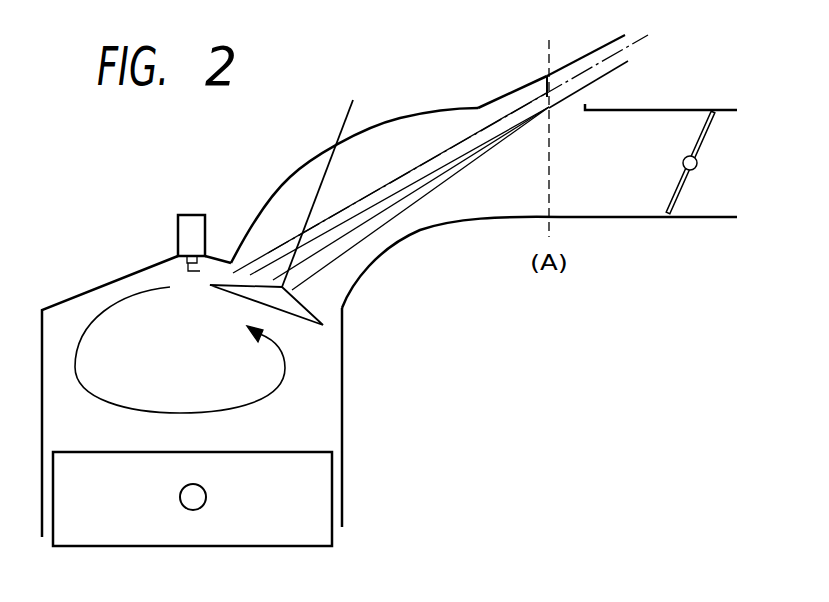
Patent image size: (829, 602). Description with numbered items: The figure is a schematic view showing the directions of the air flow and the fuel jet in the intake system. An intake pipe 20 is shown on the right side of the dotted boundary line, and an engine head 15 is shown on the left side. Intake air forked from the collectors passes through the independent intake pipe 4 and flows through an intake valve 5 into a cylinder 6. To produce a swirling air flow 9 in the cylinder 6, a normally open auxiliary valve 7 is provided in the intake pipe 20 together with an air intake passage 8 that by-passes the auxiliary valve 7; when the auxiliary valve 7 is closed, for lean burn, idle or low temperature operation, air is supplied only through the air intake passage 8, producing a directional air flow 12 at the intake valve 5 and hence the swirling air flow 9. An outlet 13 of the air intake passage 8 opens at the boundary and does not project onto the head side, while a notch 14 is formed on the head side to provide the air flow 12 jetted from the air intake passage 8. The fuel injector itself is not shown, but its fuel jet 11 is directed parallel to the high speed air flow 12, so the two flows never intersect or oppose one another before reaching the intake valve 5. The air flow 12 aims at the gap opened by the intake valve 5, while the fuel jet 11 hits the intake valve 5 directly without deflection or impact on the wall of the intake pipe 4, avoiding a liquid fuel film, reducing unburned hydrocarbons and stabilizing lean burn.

The independent intake pipe 4 is at (497, 218).
The intake valve 5 is at (302, 320).
The cylinder 6 is at (98, 306).
The auxiliary valve 7 is at (680, 197).
The air intake passage 8 is at (581, 56).
The swirling air flow 9 is at (228, 407).
The fuel jet 11 is at (393, 208).
The air flow 12 is at (440, 156).
The outlet 13 is at (551, 100).
The notch 14 is at (516, 96).
The engine head 15 is at (289, 176).
The intake pipe 20 is at (655, 108).